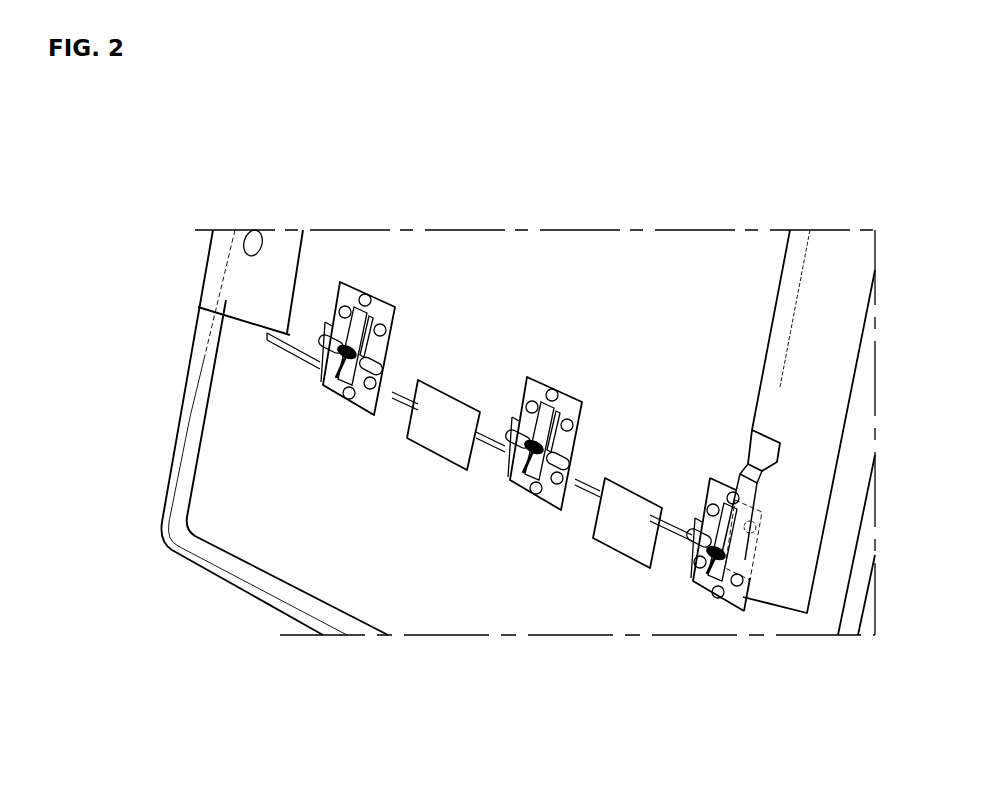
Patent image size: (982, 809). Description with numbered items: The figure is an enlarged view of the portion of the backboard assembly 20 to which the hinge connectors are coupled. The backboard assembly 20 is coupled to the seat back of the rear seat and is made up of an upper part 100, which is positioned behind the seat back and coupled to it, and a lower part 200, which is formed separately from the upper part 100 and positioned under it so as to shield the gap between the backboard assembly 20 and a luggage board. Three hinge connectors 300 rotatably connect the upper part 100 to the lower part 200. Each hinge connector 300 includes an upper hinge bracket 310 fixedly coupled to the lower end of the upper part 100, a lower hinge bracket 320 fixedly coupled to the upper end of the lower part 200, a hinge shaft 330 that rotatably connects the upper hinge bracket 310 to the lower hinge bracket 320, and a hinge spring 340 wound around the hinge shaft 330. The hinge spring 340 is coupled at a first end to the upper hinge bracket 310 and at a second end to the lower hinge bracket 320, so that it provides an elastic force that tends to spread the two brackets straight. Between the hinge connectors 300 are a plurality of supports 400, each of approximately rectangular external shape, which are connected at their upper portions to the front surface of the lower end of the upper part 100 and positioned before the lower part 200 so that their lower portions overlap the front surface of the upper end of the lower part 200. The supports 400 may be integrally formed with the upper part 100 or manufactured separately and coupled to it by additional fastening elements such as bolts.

The backboard assembly 20 is at (565, 222).
The upper part 100 is at (440, 248).
The lower part 200 is at (435, 600).
The hinge connector 300 is at (404, 453).
The upper hinge bracket 310 is at (359, 286).
The lower hinge bracket 320 is at (222, 383).
The hinge shaft 330 is at (221, 346).
The hinge spring 340 is at (221, 361).
The support 400 is at (627, 530).